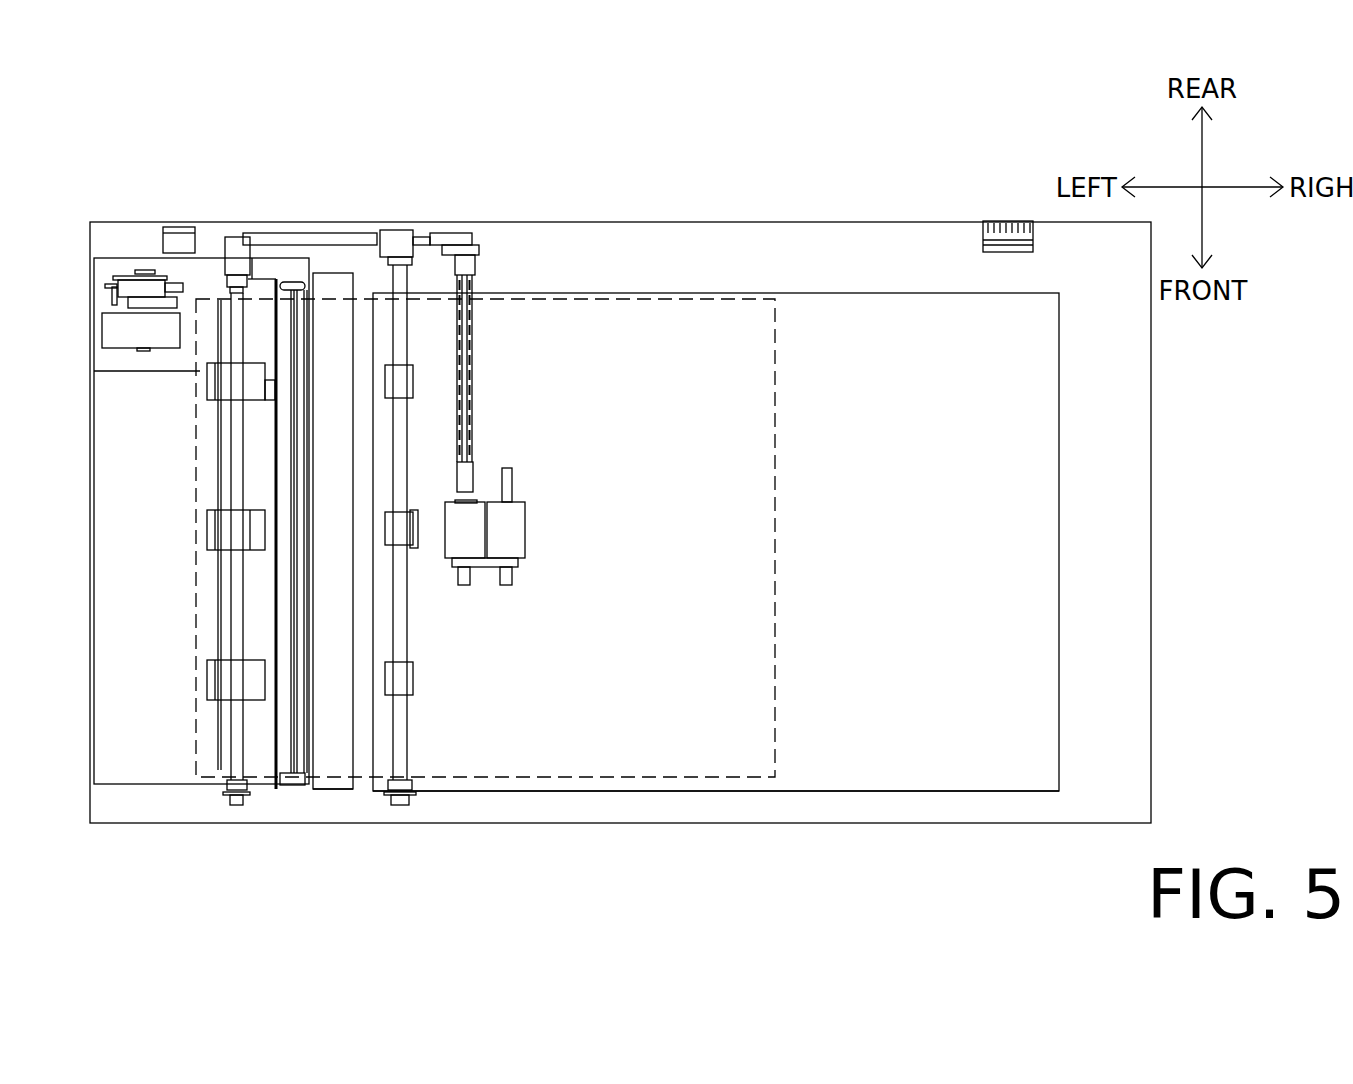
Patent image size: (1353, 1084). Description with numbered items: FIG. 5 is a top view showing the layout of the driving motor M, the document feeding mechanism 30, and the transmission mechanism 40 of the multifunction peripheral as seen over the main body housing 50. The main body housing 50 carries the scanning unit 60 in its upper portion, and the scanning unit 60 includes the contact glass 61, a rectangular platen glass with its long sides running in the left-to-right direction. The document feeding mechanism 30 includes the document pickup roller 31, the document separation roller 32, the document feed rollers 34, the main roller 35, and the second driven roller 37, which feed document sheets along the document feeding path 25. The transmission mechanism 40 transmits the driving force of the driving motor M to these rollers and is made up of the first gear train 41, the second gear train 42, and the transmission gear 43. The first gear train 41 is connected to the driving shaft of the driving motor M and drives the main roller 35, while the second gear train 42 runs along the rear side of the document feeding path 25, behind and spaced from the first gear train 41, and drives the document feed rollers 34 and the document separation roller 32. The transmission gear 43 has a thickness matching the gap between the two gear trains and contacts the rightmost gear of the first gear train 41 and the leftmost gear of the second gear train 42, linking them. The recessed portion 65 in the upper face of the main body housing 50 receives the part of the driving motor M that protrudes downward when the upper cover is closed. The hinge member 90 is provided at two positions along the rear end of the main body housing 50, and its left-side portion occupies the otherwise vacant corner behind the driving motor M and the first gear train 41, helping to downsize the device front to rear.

The document feeding path 25 is at (660, 778).
The document feeding mechanism 30 is at (540, 449).
The document pickup roller 31 is at (512, 527).
The document separation roller 32 is at (456, 527).
The document feed rollers 34 is at (405, 688).
The main roller 35 is at (157, 580).
The second driven roller 37 is at (222, 533).
The transmission mechanism 40 is at (108, 254).
The first gear train 41 is at (180, 277).
The second gear train 42 is at (355, 233).
The transmission gear 43 is at (235, 237).
The main body housing 50 is at (1100, 806).
The scanning unit 60 is at (1020, 652).
The contact glass 61 is at (925, 793).
The recessed portion 65 is at (113, 360).
The hinge member 90 is at (178, 227).
The driving motor M is at (113, 327).